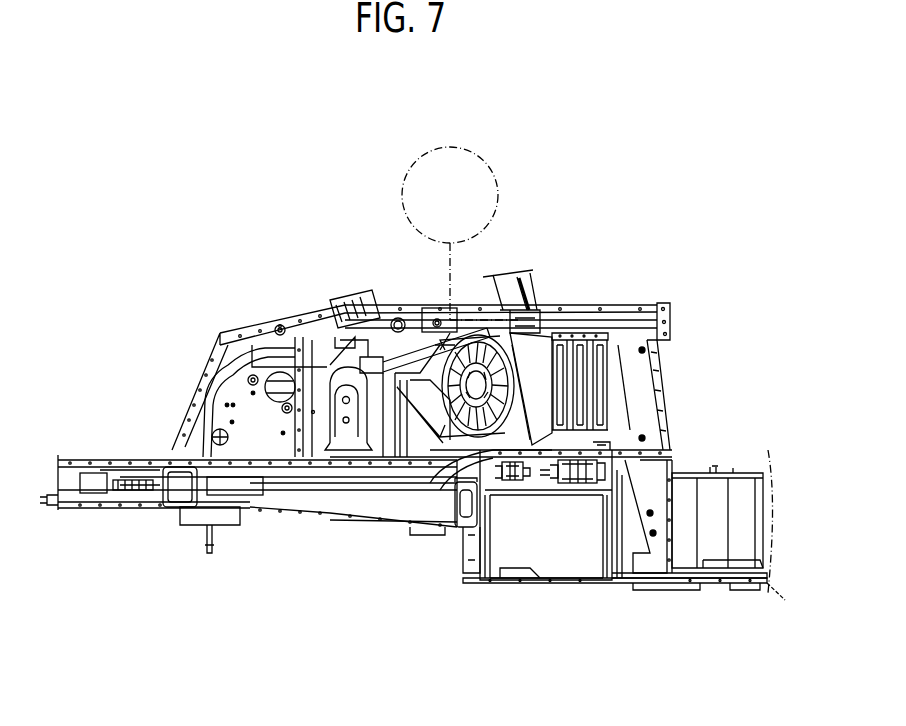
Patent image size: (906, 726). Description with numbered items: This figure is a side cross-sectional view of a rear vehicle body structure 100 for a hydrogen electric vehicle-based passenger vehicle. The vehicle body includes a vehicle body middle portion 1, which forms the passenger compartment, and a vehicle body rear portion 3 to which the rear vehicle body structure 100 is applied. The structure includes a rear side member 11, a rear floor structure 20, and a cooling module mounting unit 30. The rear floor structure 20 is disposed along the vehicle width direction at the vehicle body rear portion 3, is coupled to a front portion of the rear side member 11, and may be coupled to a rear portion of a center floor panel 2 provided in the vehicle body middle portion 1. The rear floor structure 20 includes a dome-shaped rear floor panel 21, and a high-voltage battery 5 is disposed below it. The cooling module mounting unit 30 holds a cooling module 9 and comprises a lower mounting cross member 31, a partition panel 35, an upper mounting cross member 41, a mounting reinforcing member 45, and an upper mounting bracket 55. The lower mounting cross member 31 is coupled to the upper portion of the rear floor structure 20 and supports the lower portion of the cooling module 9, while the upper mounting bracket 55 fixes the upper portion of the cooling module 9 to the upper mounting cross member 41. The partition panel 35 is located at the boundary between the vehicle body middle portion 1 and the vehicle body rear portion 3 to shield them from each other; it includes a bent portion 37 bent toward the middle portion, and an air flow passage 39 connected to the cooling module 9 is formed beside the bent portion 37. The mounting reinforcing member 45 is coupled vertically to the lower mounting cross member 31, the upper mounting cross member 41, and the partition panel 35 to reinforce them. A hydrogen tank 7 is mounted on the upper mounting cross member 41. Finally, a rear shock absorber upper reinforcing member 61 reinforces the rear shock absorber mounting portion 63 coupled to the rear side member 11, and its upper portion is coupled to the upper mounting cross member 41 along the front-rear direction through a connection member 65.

The rear vehicle body structure 100 is at (424, 110).
The hydrogen tank 7 is at (498, 192).
The rear shock absorber upper reinforcing member 61 is at (317, 380).
The rear shock absorber mounting portion 63 is at (355, 455).
The connection member 65 is at (440, 320).
The cooling module 9 is at (438, 372).
The rear side member 11 is at (263, 473).
The vehicle body rear portion 3 is at (297, 513).
The upper mounting bracket 55 is at (505, 295).
The upper mounting cross member 41 is at (532, 367).
The mounting reinforcing member 45 is at (555, 333).
The partition panel 35 is at (587, 370).
The bent portion 37 is at (587, 390).
The air flow passage 39 is at (590, 413).
The cooling module mounting unit 30 is at (556, 443).
The center floor panel 2 is at (733, 565).
The battery 5 is at (557, 537).
The rear floor structure 20 is at (492, 467).
The rear floor panel 21 is at (510, 477).
The lower mounting cross member 31 is at (540, 462).
The vehicle body middle portion 1 is at (740, 597).